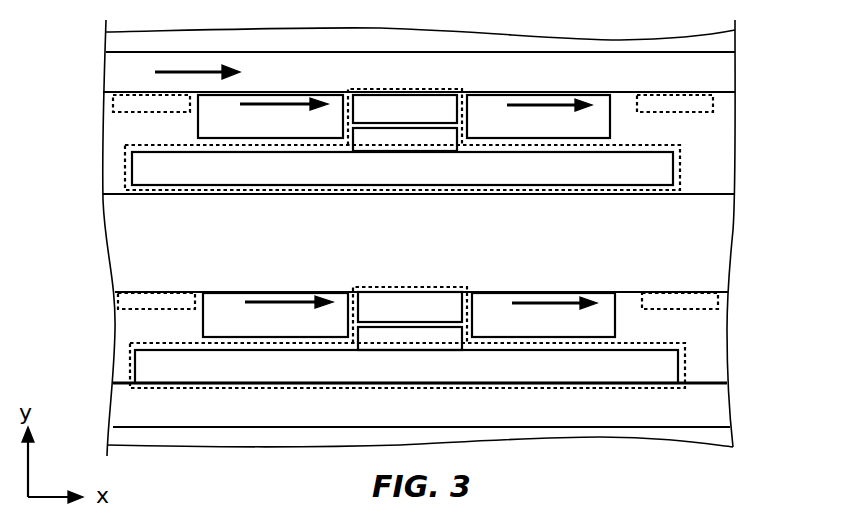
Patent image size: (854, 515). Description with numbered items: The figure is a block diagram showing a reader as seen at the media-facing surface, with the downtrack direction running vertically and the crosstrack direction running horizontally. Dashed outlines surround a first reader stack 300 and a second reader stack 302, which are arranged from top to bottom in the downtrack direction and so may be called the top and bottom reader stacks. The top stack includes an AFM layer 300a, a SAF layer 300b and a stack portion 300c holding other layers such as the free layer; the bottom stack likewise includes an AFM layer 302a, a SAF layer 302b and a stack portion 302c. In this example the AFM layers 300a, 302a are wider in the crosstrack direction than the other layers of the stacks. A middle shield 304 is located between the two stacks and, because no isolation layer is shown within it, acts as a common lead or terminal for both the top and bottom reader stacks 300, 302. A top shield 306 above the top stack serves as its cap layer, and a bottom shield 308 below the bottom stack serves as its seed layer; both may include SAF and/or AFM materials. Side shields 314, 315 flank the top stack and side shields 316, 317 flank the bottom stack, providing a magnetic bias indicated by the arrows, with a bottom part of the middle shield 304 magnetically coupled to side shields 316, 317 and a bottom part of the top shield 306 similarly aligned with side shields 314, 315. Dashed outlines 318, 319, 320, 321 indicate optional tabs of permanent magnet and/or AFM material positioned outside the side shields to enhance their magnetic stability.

The first reader stack 300 is at (464, 139).
The AFM layer 300a is at (680, 165).
The SAF layer 300b is at (405, 139).
The stack portion 300c is at (405, 109).
The second reader stack 302 is at (475, 337).
The AFM layer 302a is at (688, 372).
The SAF layer 302b is at (410, 338).
The stack portion 302c is at (410, 307).
The middle shield 304 is at (683, 238).
The top shield 306 is at (710, 77).
The bottom shield 308 is at (715, 407).
The side shield 314 is at (215, 122).
The side shield 315 is at (600, 125).
The side shield 316 is at (222, 321).
The side shield 317 is at (608, 323).
The tab 318 is at (122, 107).
The tab 319 is at (700, 108).
The tab 320 is at (120, 300).
The tab 321 is at (713, 300).